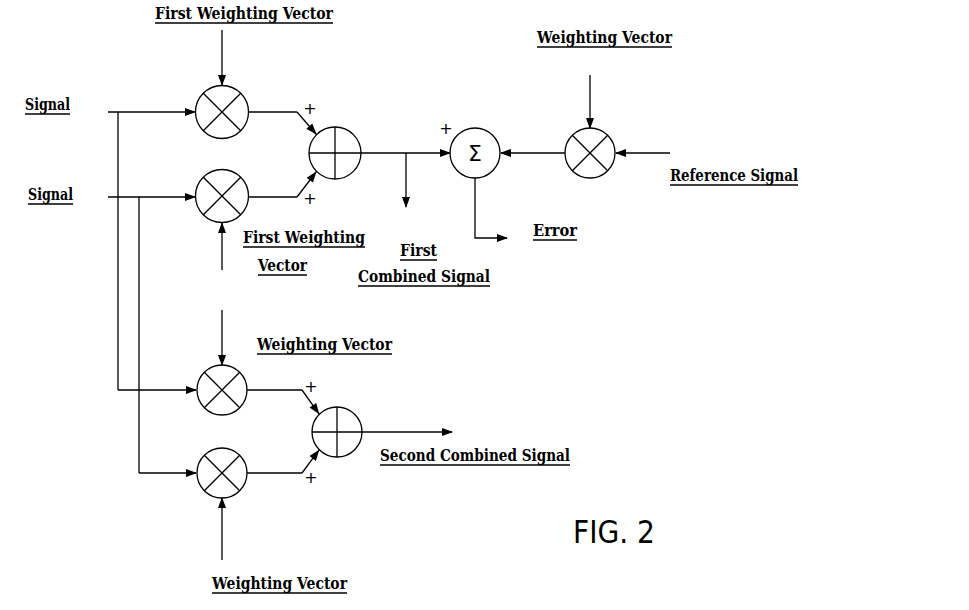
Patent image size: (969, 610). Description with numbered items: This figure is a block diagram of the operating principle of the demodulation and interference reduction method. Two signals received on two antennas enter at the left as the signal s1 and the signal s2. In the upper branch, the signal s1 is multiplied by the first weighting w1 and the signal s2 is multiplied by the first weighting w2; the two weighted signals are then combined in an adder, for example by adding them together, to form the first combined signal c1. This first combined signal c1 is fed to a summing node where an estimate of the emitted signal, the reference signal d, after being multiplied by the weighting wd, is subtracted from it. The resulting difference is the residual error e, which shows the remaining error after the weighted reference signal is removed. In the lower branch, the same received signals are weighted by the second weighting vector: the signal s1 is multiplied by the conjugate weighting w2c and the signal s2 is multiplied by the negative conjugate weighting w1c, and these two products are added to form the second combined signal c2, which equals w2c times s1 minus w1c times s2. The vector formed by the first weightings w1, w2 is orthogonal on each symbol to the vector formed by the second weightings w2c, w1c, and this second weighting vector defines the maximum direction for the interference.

The received signal s1 is at (142, 249).
The received signal s2 is at (142, 333).
The first weighting w1 is at (231, 58).
The first weighting w2 is at (231, 255).
The weighting wd is at (589, 90).
The second weighting vector w2* w2c is at (235, 336).
The second weighting vector -w1* w1c is at (238, 531).
The first combined signal c1 is at (406, 192).
The second combined signal c2 is at (417, 434).
The residual error e is at (498, 213).
The reference signal d is at (593, 154).